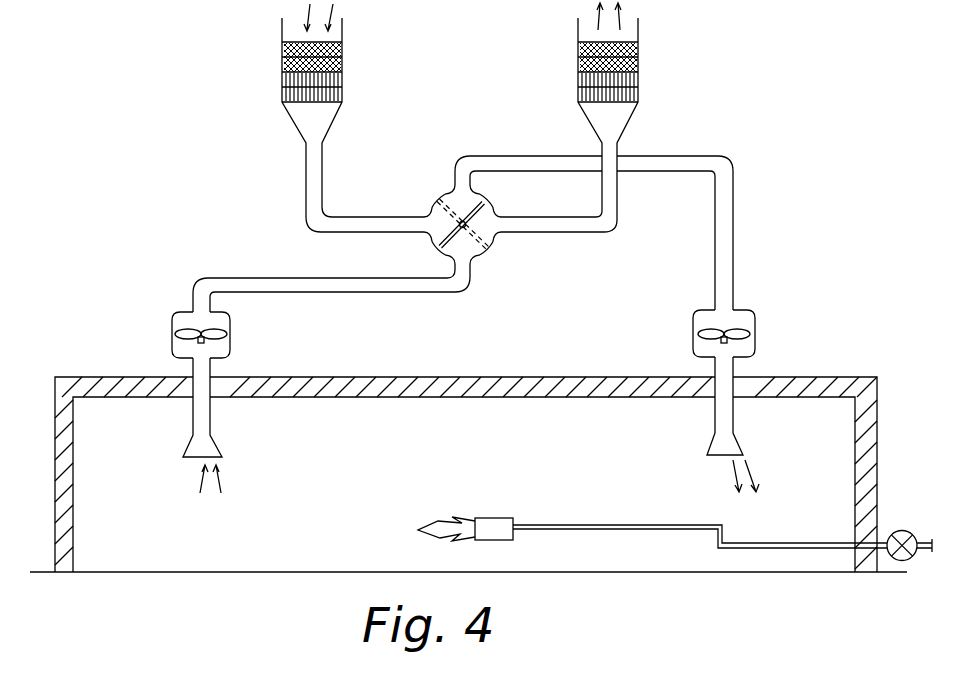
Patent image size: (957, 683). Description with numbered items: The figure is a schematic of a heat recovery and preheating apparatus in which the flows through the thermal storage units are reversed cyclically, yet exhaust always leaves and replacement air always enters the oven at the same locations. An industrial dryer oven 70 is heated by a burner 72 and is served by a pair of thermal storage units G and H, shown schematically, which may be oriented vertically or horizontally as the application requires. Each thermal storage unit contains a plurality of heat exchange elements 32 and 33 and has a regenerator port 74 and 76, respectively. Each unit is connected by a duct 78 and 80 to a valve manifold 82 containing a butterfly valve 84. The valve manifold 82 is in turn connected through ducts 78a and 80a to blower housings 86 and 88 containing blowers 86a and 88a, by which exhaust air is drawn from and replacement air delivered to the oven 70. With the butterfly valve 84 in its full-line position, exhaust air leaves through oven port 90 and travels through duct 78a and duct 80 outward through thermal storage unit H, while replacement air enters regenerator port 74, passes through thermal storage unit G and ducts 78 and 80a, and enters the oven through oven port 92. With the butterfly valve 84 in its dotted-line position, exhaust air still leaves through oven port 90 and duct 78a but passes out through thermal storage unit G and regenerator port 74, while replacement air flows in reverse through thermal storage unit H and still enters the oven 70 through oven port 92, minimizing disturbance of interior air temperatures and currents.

The industrial dryer oven 70 is at (878, 377).
The burner 72 is at (490, 518).
The regenerator port 74 is at (288, 18).
The regenerator port 76 is at (628, 18).
The duct 78 is at (306, 157).
The duct 78a is at (290, 278).
The duct 80 is at (617, 186).
The duct 80a is at (733, 208).
The valve manifold 82 is at (490, 253).
The butterfly valve 84 is at (492, 206).
The blower housing 86 is at (172, 330).
The blower 86a is at (230, 340).
The blower housing 88 is at (755, 318).
The blower 88a is at (755, 342).
The oven port 90 is at (195, 458).
The oven port 92 is at (722, 457).
The heat exchange element 32 is at (343, 92).
The heat exchange element 33 is at (283, 62).
The thermal storage unit G is at (343, 45).
The thermal storage unit H is at (639, 45).